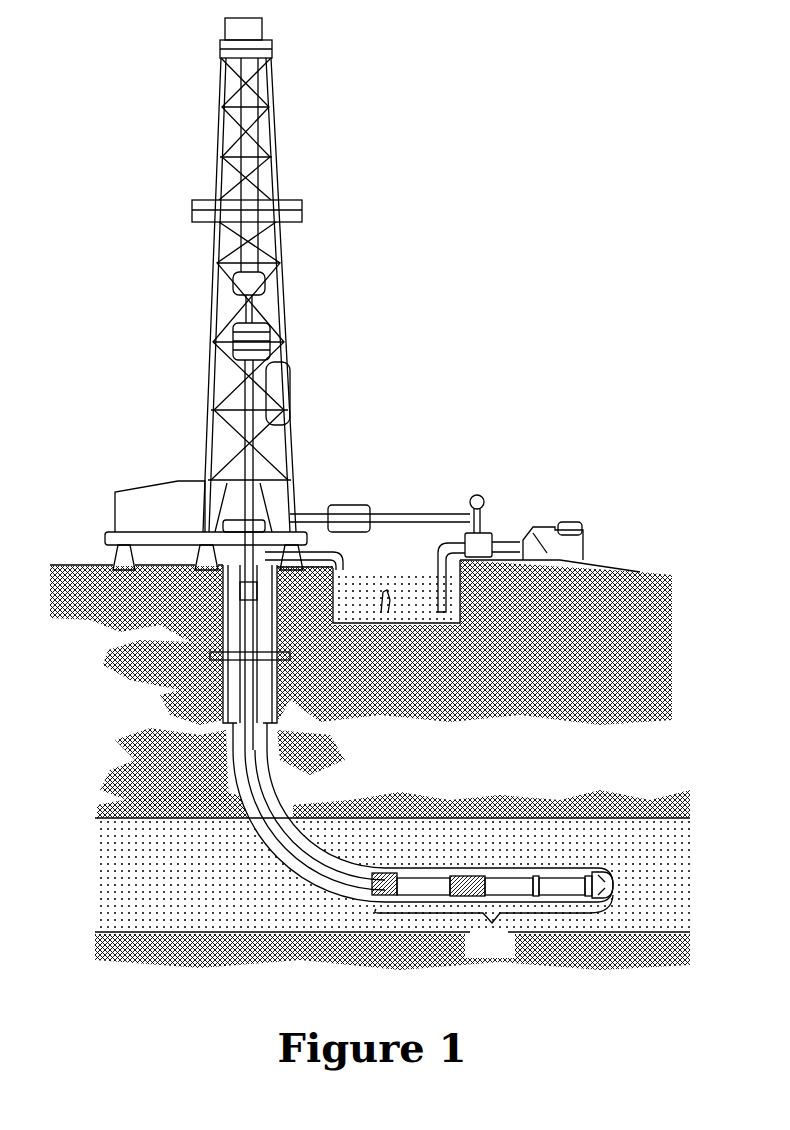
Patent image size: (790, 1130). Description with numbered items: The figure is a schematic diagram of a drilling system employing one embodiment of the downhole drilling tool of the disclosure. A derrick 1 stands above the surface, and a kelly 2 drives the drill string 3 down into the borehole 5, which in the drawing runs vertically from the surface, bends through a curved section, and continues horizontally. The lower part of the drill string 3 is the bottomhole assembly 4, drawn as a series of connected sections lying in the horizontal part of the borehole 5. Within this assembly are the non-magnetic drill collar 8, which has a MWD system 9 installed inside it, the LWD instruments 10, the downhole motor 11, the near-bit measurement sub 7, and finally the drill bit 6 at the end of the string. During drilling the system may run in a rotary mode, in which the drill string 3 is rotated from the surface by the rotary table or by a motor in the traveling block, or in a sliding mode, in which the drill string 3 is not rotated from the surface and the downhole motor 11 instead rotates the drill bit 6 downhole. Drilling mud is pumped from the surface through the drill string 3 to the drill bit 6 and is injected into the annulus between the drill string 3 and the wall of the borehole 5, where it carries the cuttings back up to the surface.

The derrick 1 is at (288, 342).
The kelly 2 is at (260, 460).
The drill string 3 is at (262, 823).
The bottomhole assembly 4 is at (494, 915).
The borehole 5 is at (305, 820).
The drill bit 6 is at (603, 870).
The near-bit measurement sub 7 is at (548, 877).
The non-magnetic drill collar 8 is at (405, 877).
The MWD system 9 is at (437, 877).
The LWD instruments 10 is at (470, 883).
The downhole motor 11 is at (507, 883).